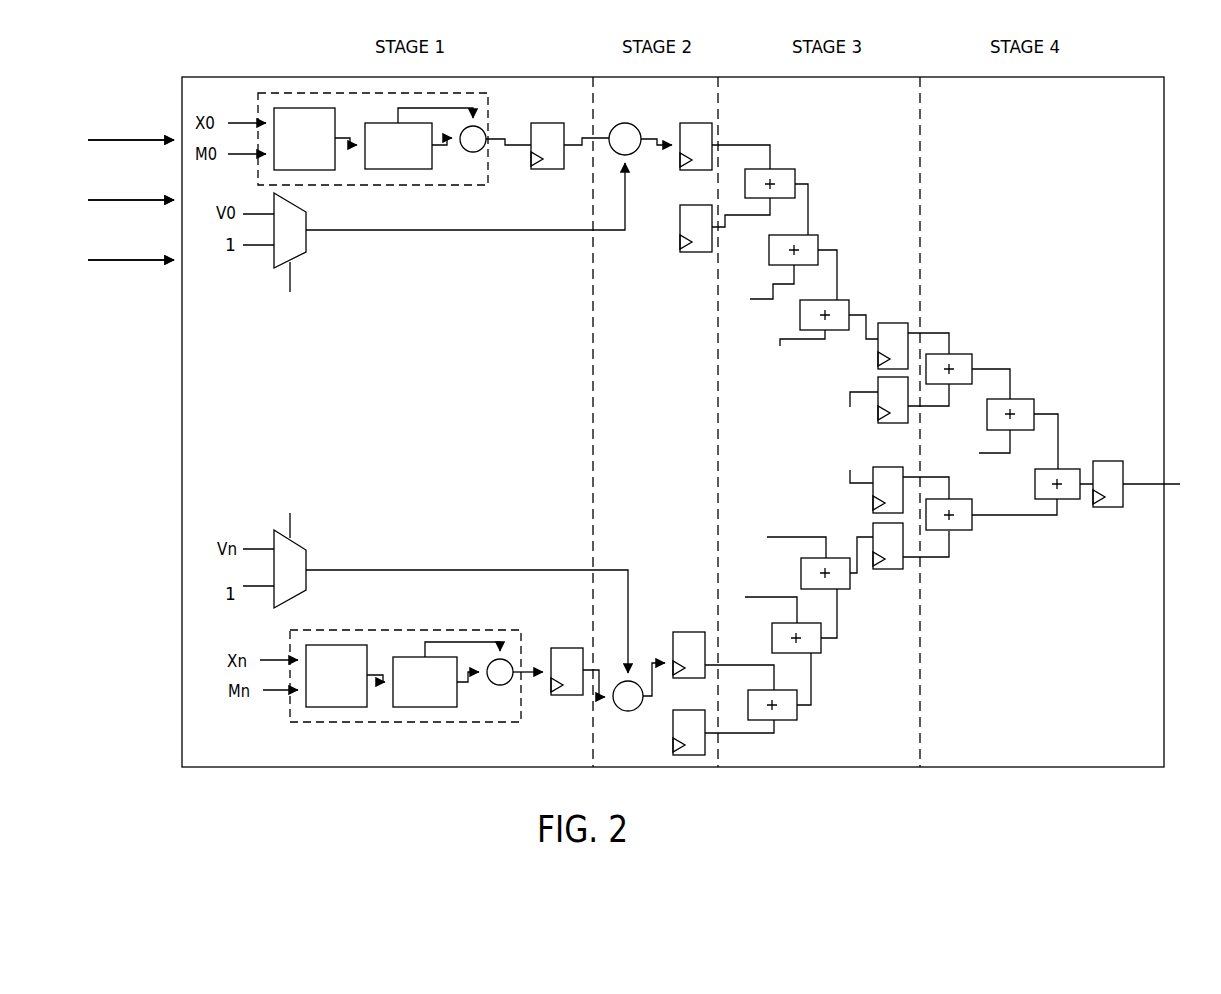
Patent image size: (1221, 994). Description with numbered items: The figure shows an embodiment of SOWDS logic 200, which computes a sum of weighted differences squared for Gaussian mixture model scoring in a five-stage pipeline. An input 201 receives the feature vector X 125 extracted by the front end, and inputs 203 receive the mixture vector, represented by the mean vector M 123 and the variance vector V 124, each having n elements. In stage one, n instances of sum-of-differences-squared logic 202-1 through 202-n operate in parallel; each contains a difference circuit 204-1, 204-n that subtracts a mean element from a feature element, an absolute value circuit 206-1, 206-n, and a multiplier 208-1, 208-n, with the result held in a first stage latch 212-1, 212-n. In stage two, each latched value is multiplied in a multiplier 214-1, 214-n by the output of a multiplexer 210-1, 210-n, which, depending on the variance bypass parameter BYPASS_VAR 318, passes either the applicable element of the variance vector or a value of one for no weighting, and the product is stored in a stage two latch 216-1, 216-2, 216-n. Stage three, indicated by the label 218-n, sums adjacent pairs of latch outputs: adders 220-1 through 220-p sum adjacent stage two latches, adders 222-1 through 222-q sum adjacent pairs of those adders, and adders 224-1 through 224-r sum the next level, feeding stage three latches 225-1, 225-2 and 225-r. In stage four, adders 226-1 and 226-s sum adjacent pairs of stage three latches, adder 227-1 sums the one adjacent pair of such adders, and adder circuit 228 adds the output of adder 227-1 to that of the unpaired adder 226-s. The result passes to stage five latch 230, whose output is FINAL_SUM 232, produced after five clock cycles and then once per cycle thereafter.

The SOWDS logic 200 is at (1023, 828).
The input 201 is at (113, 142).
The input 203 is at (115, 203).
The mean vector M 123 is at (118, 186).
The variance vector V 124 is at (122, 247).
The feature vector X 125 is at (123, 126).
The variance bypass input parameter (BYPASS_VAR) 318 is at (303, 400).
The sum-of-differences-squared (SODS) logic 202-1 is at (413, 138).
The sum-of-differences-squared (SODS) logic 202-n is at (430, 660).
The difference circuit 204-1 is at (322, 158).
The difference circuit 204-n is at (352, 696).
The absolute value circuit 206-1 is at (417, 166).
The absolute value circuit 206-n is at (442, 704).
The multiplier 208-1 is at (464, 152).
The multiplier 208-n is at (500, 686).
The multiplexer 210-1 is at (449, 215).
The multiplexer 210-n is at (308, 568).
The latch 212-1 is at (557, 159).
The latch 212-n is at (570, 648).
The multiplier 214-1 is at (630, 127).
The multiplier 214-n is at (628, 709).
The stage 2 latch 216-1 is at (695, 134).
The stage 2 latch 216-2 is at (690, 242).
The stage 2 latch 216-n is at (690, 669).
The adder tree 218-n is at (805, 264).
The adder 220-1 is at (764, 174).
The adder 220-p is at (784, 716).
The adder 222-1 is at (793, 240).
The adder 222-q is at (789, 627).
The adder 224-1 is at (823, 305).
The adder 224-r is at (818, 563).
The stage 3 latch 225-1 is at (889, 336).
The stage 3 latch 225-2 is at (889, 409).
The stage 3 latch 225-r is at (884, 557).
The adder 226-1 is at (961, 356).
The adder 226-s is at (962, 530).
The adder 227-1 is at (1022, 403).
The adder circuit 228 is at (1054, 474).
The stage 5 latch 230 is at (1108, 496).
The FINAL_SUM 232 is at (1151, 495).